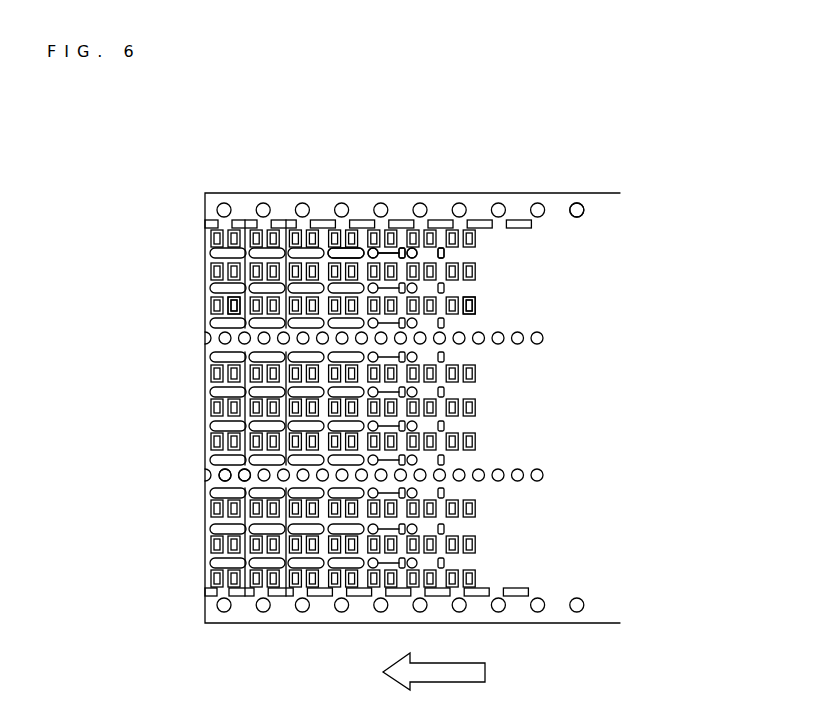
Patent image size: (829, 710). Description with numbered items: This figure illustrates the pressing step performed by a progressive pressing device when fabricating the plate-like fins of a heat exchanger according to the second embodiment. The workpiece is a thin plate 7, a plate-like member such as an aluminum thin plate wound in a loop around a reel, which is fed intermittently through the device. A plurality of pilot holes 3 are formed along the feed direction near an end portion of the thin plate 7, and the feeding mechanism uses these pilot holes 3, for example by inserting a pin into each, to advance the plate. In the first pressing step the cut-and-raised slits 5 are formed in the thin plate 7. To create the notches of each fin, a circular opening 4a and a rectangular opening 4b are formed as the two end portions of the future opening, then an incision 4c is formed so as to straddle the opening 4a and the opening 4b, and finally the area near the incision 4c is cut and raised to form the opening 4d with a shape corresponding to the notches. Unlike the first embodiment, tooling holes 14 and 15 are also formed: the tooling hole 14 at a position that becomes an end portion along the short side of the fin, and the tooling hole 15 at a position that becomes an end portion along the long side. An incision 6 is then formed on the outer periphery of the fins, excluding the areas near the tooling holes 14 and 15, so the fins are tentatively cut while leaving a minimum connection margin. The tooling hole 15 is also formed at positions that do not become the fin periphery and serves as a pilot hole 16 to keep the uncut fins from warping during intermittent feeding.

The pilot hole 3 is at (578, 203).
The circular opening 4a is at (414, 250).
The rectangular opening 4b is at (441, 252).
The incision 4c is at (383, 253).
The opening 4d is at (352, 253).
The cut-and-raised slit 5 is at (475, 298).
The incision 6 is at (237, 307).
The thin plate 7 is at (583, 455).
The tooling hole 14 is at (243, 225).
The tooling hole 15 is at (243, 474).
The pilot hole 16 is at (222, 474).